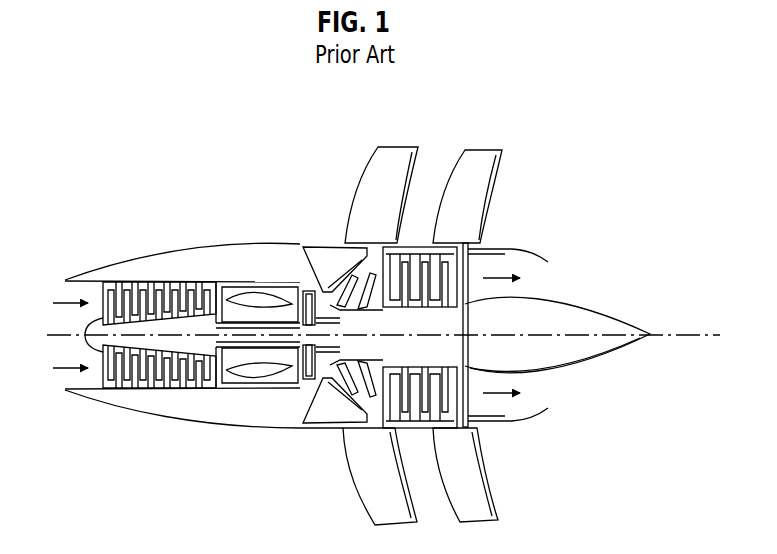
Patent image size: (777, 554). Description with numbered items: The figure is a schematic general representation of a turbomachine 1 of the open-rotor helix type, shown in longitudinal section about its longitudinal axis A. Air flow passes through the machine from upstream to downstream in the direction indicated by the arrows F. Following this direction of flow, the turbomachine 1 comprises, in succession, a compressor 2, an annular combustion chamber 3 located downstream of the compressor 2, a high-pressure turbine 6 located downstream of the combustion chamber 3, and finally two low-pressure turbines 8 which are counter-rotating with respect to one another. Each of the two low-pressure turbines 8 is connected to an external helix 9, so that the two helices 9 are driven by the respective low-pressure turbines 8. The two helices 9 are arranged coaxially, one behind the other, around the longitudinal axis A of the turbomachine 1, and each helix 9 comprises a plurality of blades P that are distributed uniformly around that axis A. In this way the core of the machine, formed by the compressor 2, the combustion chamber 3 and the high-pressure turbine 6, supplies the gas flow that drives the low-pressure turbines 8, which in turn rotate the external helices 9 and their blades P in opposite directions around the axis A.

The turbomachine 1 is at (128, 185).
The compressor 2 is at (121, 398).
The annular combustion chamber 3 is at (258, 394).
The high-pressure turbine 6 is at (303, 392).
The low-pressure turbines 8 is at (470, 358).
The external helix 9 is at (405, 145).
The longitudinal axis A is at (673, 334).
The arrows indicating direction of air flow F is at (62, 366).
The blades P is at (467, 483).